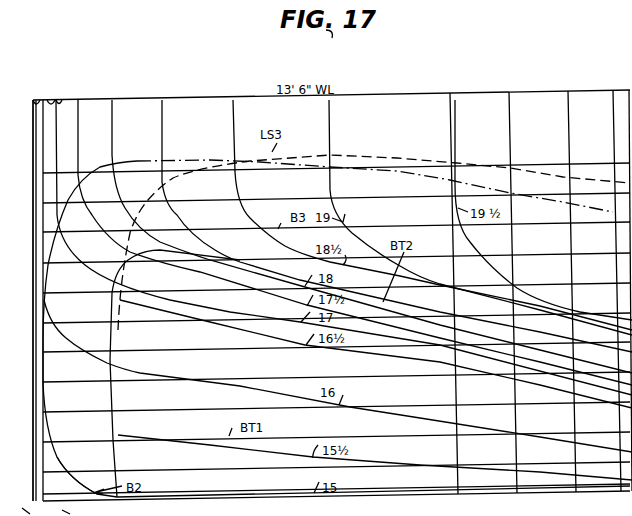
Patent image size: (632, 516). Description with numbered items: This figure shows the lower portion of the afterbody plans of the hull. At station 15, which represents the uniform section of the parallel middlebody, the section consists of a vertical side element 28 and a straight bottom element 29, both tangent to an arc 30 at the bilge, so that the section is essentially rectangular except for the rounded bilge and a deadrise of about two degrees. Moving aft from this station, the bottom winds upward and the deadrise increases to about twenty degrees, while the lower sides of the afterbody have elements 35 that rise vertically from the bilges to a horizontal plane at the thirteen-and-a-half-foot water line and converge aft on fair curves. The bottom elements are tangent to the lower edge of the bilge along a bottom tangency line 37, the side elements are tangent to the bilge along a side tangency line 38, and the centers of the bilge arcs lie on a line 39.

The station 15 is at (30, 104).
The vertical side element 28 is at (43, 258).
The straight bottom element 29 is at (181, 497).
The arc 30 is at (73, 478).
The elements 35 is at (58, 102).
The bottom tangency line 37 is at (111, 446).
The side tangency line 38 is at (127, 160).
The line 39 is at (402, 163).